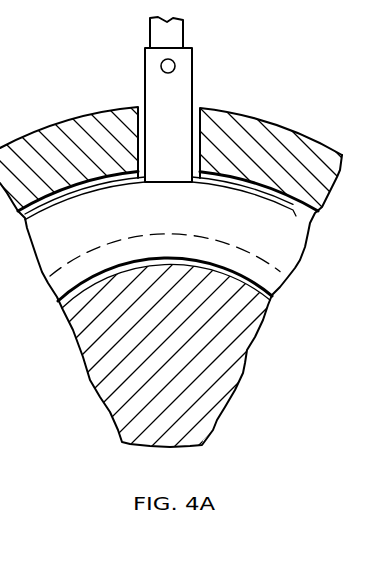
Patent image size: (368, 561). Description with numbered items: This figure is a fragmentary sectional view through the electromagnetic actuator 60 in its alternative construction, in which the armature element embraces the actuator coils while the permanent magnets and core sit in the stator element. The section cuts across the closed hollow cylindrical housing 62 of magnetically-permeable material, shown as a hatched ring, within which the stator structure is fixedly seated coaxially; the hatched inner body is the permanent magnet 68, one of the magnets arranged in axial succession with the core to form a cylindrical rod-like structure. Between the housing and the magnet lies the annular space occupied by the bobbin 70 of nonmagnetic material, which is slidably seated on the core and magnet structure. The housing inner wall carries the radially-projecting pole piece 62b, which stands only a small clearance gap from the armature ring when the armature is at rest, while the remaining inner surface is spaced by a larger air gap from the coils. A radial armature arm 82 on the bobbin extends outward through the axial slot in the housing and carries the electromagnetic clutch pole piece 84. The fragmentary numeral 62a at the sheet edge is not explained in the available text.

The electromagnetic actuator 60 is at (171, 301).
The housing 62 is at (260, 135).
The ring portion 62a is at (19, 557).
The housing pole piece 62b is at (293, 207).
The permanent magnet 68 is at (230, 355).
The bobbin 70 is at (180, 217).
The armature arm 82 is at (180, 85).
The electromagnetic clutch pole piece 84 is at (178, 35).